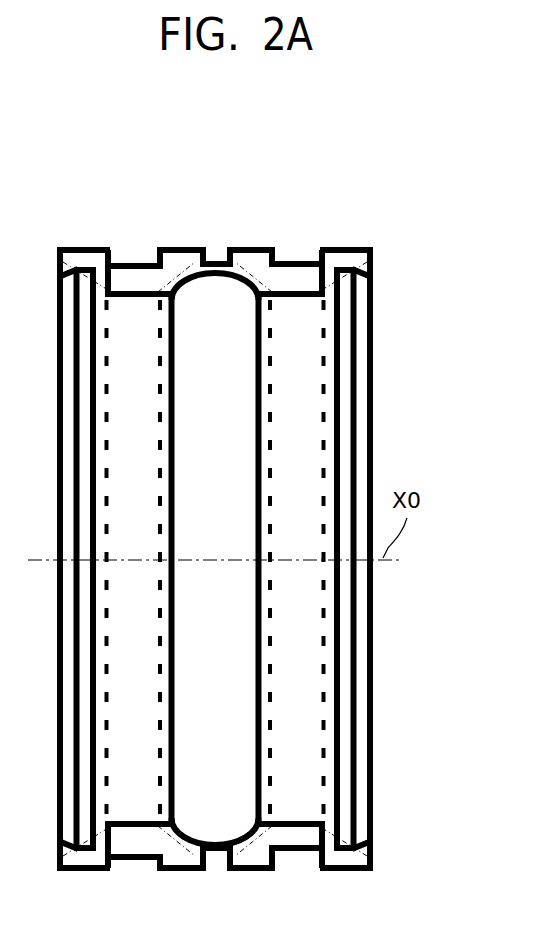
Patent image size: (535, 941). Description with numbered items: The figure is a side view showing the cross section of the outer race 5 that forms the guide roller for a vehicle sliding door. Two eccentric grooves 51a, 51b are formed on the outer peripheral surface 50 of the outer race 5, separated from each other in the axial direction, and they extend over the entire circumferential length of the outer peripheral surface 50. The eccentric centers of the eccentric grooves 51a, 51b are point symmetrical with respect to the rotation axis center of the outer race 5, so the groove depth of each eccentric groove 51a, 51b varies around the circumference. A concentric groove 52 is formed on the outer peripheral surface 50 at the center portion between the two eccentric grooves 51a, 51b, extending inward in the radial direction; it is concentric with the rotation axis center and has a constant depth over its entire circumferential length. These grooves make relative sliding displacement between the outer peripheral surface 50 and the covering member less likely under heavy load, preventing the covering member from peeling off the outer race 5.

The outer race 5 is at (347, 247).
The outer peripheral surface 50 is at (253, 245).
The eccentric groove 51a is at (287, 262).
The eccentric groove 51b is at (150, 243).
The concentric groove 52 is at (217, 245).